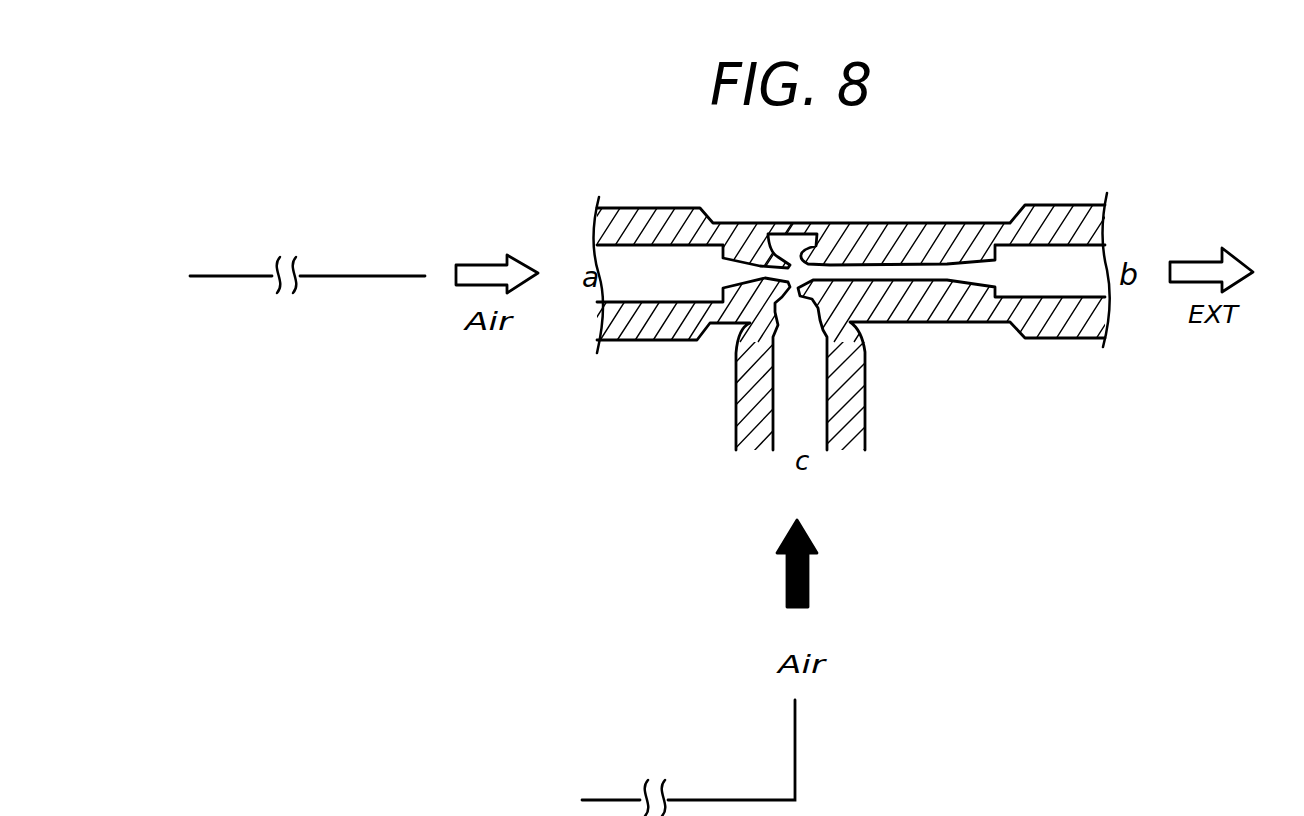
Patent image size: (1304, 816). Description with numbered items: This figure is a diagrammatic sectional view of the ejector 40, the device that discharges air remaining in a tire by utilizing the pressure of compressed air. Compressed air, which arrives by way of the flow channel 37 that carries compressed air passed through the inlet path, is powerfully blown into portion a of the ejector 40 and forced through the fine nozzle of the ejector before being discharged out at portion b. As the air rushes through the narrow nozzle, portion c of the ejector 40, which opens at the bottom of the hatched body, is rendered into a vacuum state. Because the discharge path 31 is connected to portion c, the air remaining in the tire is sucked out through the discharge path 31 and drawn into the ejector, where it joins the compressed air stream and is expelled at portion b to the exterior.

The discharge path 31 is at (797, 753).
The flow channel 37 is at (348, 276).
The ejector 40 is at (918, 223).